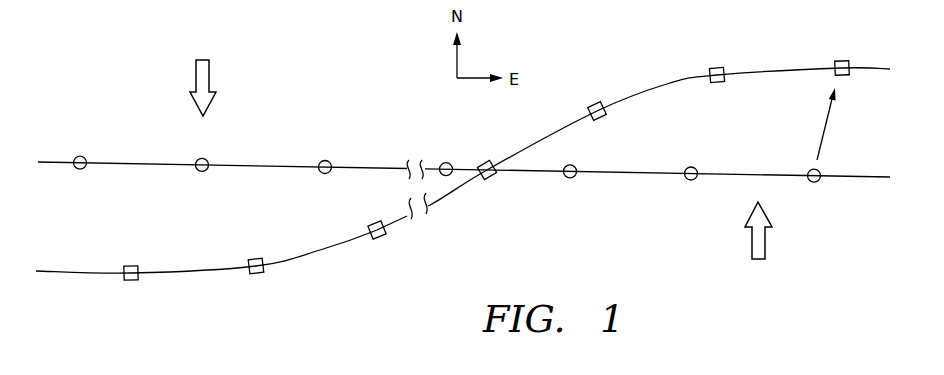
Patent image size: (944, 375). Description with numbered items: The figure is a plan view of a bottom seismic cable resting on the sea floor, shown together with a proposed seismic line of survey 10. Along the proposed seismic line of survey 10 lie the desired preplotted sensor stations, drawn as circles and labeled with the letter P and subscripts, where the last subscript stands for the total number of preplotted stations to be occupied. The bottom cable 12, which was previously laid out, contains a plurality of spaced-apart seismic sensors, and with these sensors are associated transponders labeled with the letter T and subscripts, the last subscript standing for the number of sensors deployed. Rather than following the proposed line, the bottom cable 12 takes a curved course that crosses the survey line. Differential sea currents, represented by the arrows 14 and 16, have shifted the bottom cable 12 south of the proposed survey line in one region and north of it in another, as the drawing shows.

The proposed seismic line of survey 10 is at (729, 172).
The bottom cable 12 is at (670, 82).
The arrow representing differential sea current 14 is at (196, 77).
The arrow representing differential sea current 16 is at (752, 245).